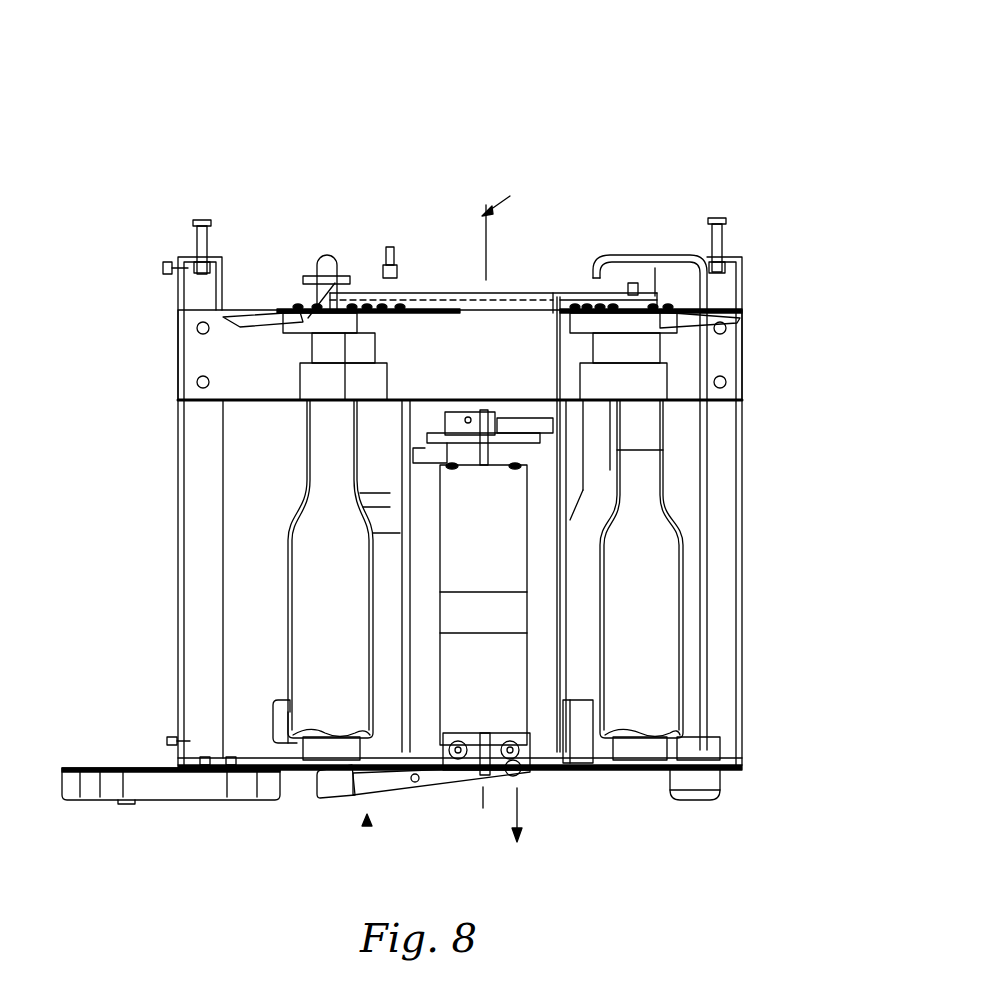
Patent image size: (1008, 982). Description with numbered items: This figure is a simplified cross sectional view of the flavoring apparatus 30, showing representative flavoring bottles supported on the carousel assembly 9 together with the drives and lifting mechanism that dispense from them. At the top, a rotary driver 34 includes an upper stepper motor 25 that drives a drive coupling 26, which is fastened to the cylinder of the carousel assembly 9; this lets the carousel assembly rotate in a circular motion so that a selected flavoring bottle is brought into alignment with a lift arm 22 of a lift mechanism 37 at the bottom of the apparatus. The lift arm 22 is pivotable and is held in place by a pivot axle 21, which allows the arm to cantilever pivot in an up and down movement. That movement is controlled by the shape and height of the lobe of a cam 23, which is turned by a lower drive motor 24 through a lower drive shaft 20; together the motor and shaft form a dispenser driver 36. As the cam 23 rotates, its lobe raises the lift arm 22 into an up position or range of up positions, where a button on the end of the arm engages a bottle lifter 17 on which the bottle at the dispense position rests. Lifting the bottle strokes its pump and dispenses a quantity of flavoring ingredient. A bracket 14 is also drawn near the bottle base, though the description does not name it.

The flavoring apparatus 30 is at (588, 100).
The carousel assembly 9 is at (520, 281).
The drive coupling 26 is at (557, 433).
The upper stepper motor 25 is at (309, 558).
The rotary driver 34 is at (470, 545).
The lower drive motor 24 is at (659, 569).
The dispenser driver 36 is at (500, 687).
The retaining bracket 14 is at (275, 720).
The bottle lifter 17 is at (287, 752).
The lift arm 22 is at (337, 783).
The lift mechanism 37 is at (367, 822).
The pivot axle 21 is at (417, 787).
The cam 23 is at (480, 776).
The lower drive shaft 20 is at (547, 775).